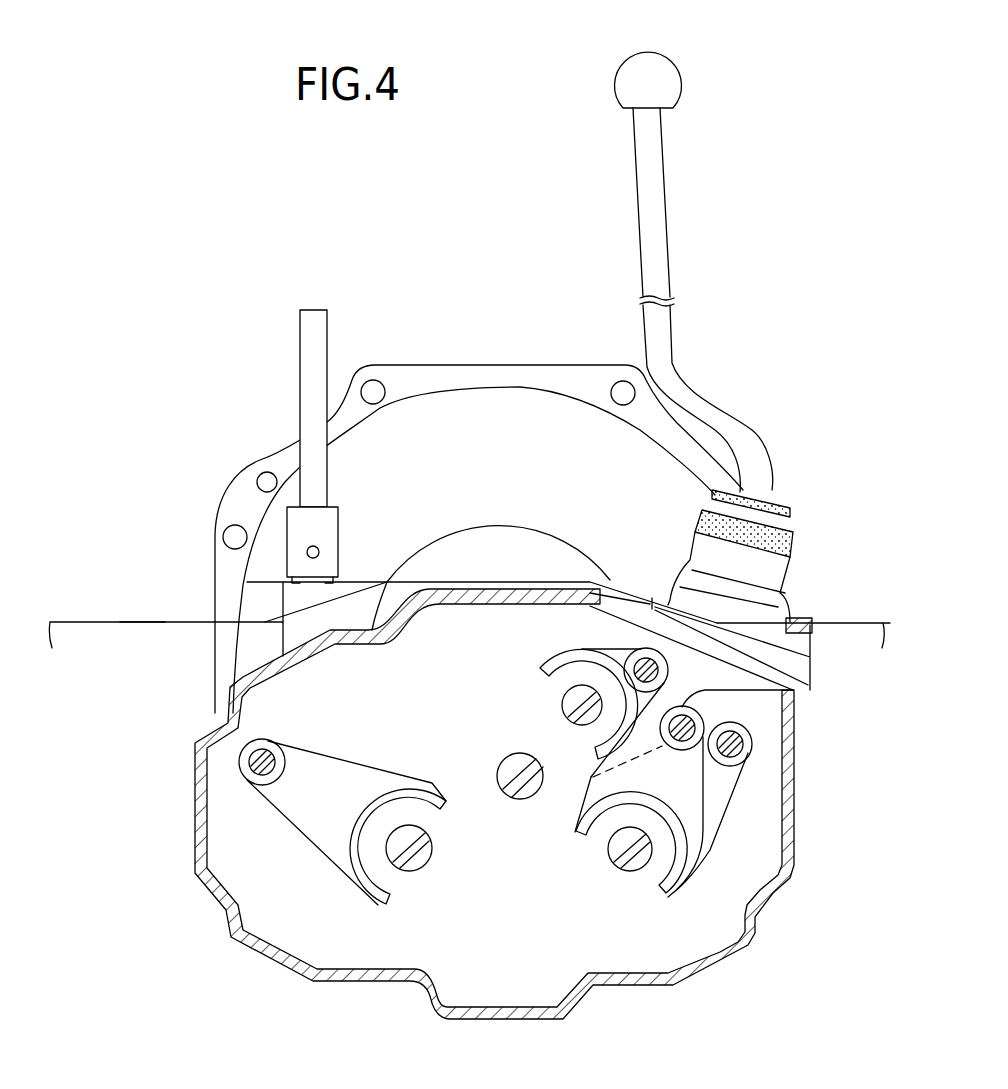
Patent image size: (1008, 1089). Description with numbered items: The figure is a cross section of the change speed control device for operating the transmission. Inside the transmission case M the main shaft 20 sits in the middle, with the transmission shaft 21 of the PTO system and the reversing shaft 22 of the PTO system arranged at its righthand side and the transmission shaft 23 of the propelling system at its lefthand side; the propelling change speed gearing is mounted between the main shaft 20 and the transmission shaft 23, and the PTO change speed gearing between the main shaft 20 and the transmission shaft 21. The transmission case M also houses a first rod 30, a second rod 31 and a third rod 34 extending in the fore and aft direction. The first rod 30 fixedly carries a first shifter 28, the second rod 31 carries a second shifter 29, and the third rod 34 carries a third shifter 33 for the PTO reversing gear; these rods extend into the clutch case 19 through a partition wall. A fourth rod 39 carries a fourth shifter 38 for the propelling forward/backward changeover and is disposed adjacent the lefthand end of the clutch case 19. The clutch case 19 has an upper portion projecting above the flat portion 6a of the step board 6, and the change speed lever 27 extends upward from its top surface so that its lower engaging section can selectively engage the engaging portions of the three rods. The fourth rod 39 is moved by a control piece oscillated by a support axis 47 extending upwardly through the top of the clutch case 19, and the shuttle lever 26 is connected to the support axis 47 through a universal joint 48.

The step board 6 is at (80, 618).
The flat portion 6a is at (142, 622).
The clutch case 19 is at (500, 390).
The main shaft 20 is at (500, 765).
The transmission shaft of the PTO system 21 is at (628, 872).
The reversing shaft of the PTO system 22 is at (562, 705).
The transmission shaft of the propelling system 23 is at (433, 852).
The shuttle lever 26 is at (305, 327).
The change speed lever 27 is at (662, 235).
The first shifter 28 is at (567, 823).
The second shifter 29 is at (712, 838).
The first rod 30 is at (792, 692).
The second rod 31 is at (746, 754).
The third shifter 33 is at (585, 650).
The third rod 34 is at (639, 665).
The fourth shifter 38 is at (308, 822).
The fourth rod 39 is at (262, 750).
The support axis 47 is at (248, 584).
The universal joint 48 is at (330, 525).
The transmission case M is at (195, 812).